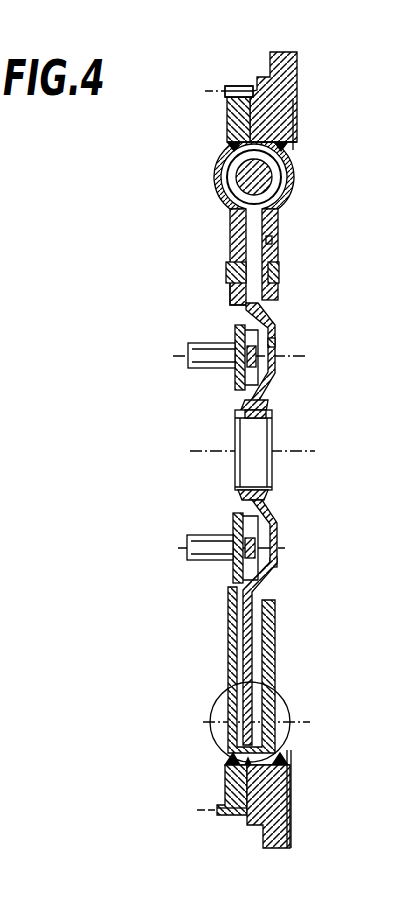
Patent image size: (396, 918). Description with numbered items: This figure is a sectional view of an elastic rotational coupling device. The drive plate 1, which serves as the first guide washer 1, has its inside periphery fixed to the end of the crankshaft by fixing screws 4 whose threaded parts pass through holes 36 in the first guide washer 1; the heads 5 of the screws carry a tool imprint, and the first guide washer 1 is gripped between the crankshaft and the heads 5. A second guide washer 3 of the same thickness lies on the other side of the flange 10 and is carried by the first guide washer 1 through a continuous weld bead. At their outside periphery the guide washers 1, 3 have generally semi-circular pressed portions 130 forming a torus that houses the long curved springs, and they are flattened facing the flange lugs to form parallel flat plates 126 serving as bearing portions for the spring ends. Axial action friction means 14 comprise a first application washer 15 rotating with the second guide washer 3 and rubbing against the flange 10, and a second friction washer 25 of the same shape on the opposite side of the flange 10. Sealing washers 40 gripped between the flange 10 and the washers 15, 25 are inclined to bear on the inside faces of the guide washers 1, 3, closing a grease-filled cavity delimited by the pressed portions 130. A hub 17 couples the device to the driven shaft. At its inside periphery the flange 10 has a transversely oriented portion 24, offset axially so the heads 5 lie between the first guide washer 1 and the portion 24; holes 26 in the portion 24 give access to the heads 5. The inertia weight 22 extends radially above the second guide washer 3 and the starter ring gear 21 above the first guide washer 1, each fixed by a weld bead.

The first guide washer 1 is at (230, 232).
The second guide washer 3 is at (284, 210).
The fixing screws 4 is at (200, 370).
The heads of the fixing screws 5 is at (240, 403).
The flange 10 is at (280, 320).
The axial action friction means 14 is at (235, 318).
The first application washer 15 is at (279, 268).
The hub 17 is at (273, 413).
The starter ring gear 21 is at (228, 115).
The inertia weight 22 is at (298, 105).
The transversely oriented portion of the flange 24 is at (278, 522).
The second friction washer 25 is at (223, 288).
The holes 26 is at (276, 343).
The holes 36 is at (218, 555).
The sealing washers 40 is at (226, 265).
The flat plates 126 is at (218, 706).
The pressed portions 130 is at (215, 173).